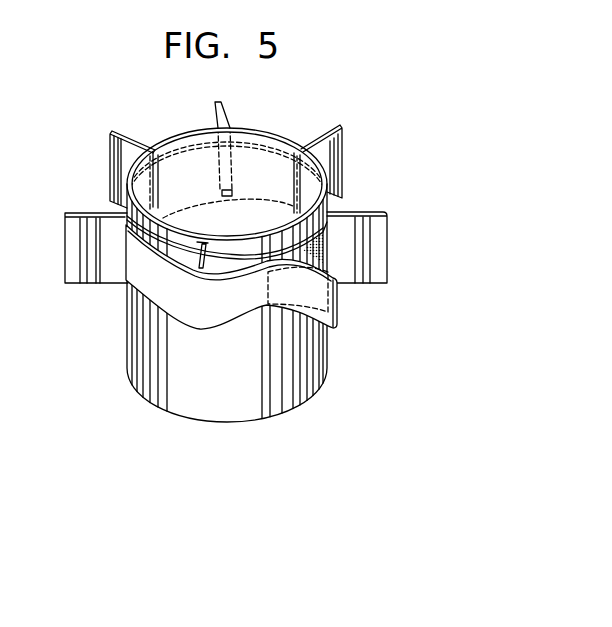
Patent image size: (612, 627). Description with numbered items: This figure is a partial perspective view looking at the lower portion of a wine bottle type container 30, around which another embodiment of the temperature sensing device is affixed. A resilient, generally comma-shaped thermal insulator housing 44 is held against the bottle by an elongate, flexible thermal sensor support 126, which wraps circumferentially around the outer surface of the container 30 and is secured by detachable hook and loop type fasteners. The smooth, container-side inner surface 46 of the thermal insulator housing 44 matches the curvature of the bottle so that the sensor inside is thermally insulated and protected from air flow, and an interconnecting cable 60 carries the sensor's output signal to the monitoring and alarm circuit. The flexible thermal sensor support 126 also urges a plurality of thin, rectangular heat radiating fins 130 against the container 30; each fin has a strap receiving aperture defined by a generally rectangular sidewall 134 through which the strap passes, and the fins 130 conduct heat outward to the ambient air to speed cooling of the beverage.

The container 30 is at (268, 402).
The thermal insulator housing 44 is at (184, 258).
The inner surface 46 is at (186, 254).
The interconnecting cable 60 is at (222, 258).
The flexible thermal sensor support 126 is at (201, 322).
The heat radiating fins 130 is at (224, 114).
The rectangular sidewall 134 is at (322, 193).